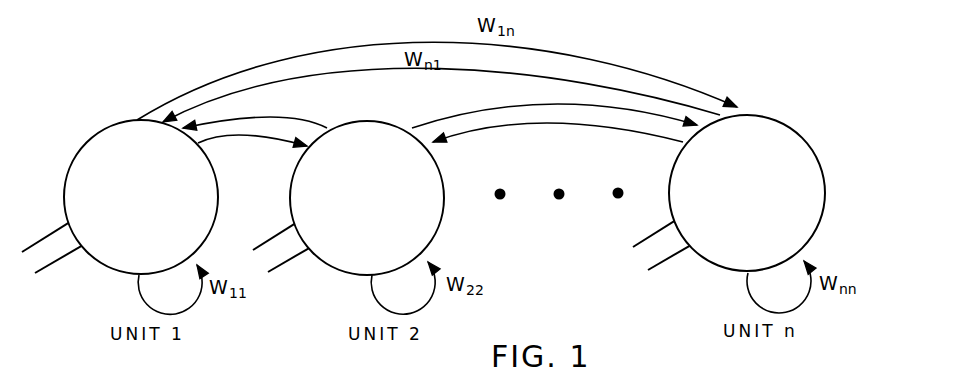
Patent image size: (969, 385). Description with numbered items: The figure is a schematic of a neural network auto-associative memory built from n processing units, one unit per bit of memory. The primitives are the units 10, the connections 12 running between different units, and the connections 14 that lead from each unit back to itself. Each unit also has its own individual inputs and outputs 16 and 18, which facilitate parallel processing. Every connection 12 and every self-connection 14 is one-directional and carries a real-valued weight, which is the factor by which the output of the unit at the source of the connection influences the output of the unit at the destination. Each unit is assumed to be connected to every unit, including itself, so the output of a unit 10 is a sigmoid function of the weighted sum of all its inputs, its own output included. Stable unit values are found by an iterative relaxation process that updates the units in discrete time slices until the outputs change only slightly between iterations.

The unit 10 is at (87, 141).
The connection 12 is at (334, 50).
The connection of unit back to itself 14 is at (144, 300).
The individual input 16 is at (48, 231).
The individual output 18 is at (68, 262).